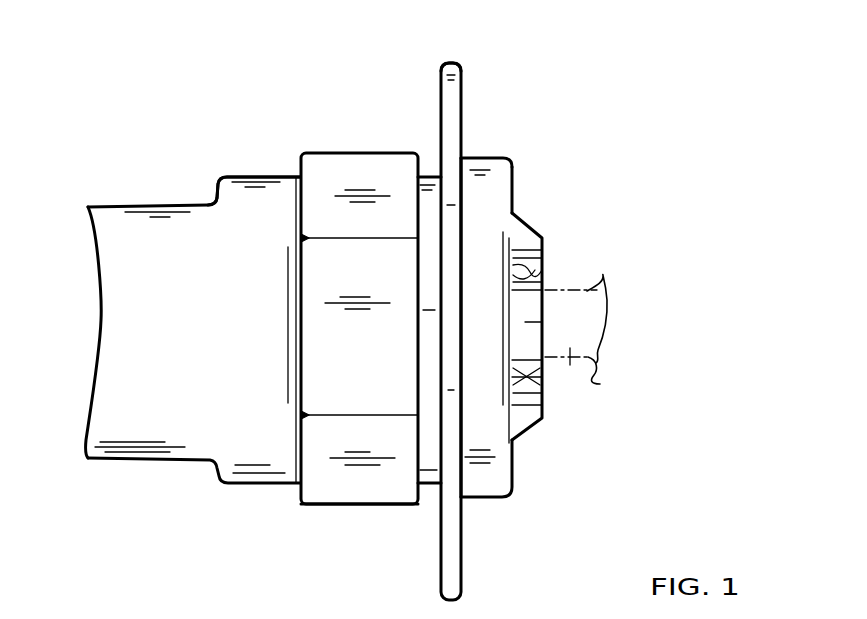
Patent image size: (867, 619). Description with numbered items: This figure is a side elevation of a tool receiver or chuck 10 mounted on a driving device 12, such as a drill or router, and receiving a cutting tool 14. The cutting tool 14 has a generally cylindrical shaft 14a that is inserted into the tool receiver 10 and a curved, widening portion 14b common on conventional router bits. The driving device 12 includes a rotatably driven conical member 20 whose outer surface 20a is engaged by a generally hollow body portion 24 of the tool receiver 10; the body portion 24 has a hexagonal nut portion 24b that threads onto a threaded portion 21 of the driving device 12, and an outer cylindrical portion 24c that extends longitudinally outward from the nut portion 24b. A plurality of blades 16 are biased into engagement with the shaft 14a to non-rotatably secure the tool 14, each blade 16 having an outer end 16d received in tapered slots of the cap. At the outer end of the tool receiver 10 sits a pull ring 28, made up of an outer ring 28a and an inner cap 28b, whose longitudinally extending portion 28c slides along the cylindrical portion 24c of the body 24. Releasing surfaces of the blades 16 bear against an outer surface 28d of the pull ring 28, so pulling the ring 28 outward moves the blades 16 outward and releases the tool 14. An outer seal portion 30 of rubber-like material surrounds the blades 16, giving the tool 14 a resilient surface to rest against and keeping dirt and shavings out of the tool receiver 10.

The tool receiver 10 is at (220, 79).
The driving device 12 is at (198, 491).
The cutting tool 14 is at (640, 322).
The shaft 14a is at (570, 365).
The widening portion 14b is at (600, 384).
The blades 16 is at (545, 220).
The outer end 16d is at (535, 273).
The conical member 20 is at (240, 325).
The outer surface 20a is at (245, 177).
The threaded portion 21 is at (288, 183).
The body portion 24 is at (358, 135).
The hexagonal nut portion 24b is at (352, 490).
The outer cylindrical portion 24c is at (432, 193).
The pull ring 28 is at (478, 541).
The outer ring 28a is at (452, 100).
The inner cap 28b is at (492, 202).
The longitudinally extending portion 28c is at (478, 182).
The outer surface 28d is at (535, 205).
The outer seal portion 30 is at (532, 262).